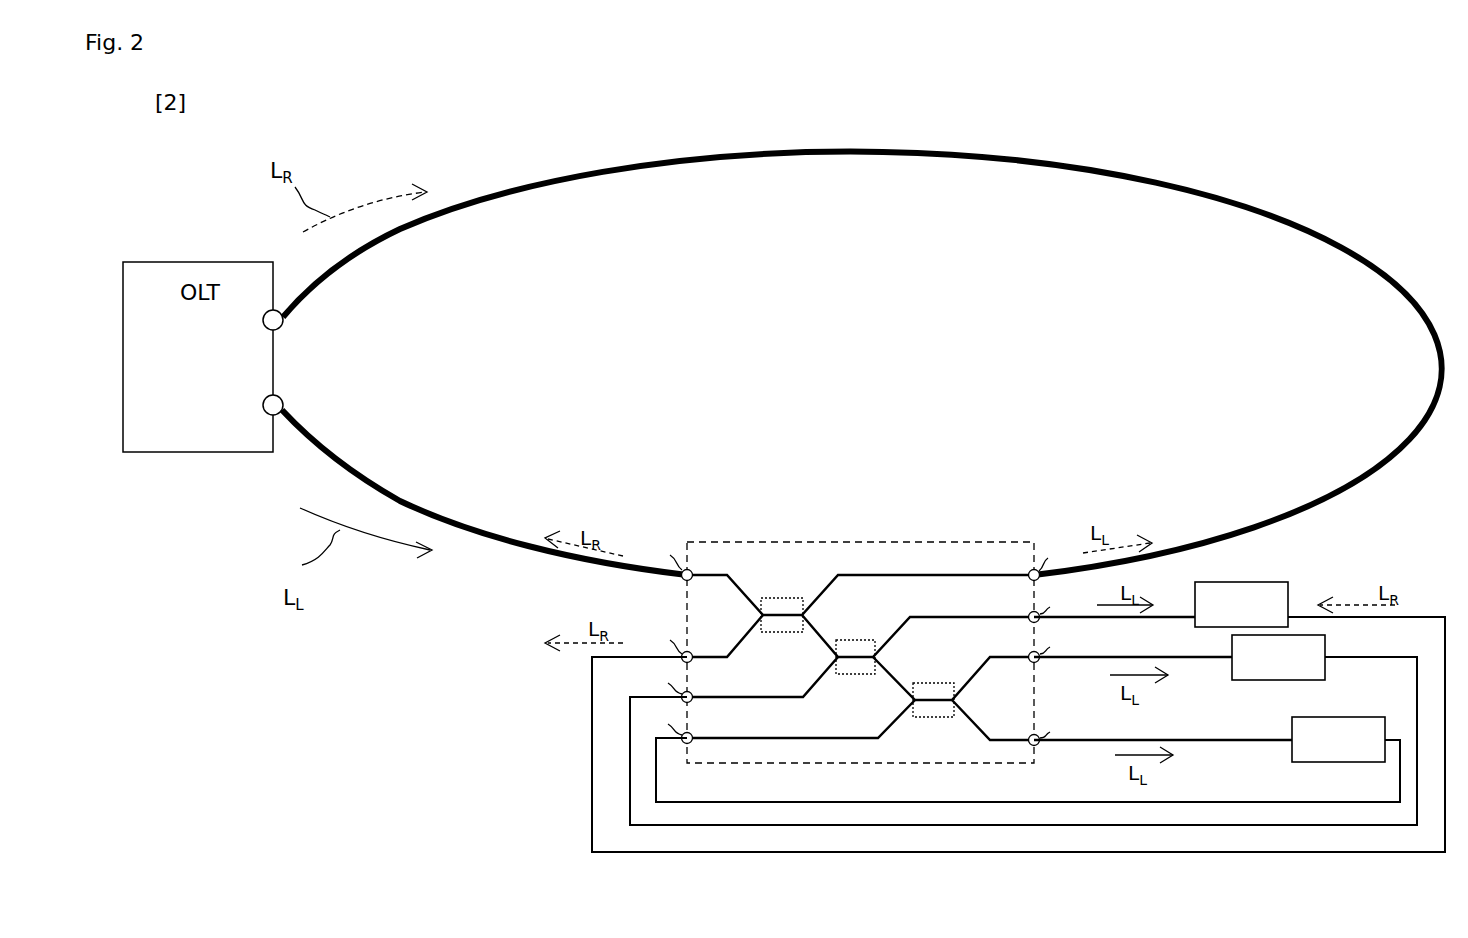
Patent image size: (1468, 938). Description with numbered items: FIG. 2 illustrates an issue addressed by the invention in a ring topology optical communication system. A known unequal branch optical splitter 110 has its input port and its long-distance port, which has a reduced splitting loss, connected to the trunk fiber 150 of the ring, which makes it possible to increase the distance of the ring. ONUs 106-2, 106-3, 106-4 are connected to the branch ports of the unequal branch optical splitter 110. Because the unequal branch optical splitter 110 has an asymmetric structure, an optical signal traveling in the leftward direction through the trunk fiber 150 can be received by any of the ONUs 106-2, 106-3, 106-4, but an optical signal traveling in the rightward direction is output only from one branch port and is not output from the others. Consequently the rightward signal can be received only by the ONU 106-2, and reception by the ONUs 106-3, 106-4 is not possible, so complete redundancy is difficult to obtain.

The trunk fiber 150 is at (1100, 160).
The unequal branch optical splitter 110 is at (905, 542).
The ONU 106-2 is at (1255, 582).
The ONU 106-3 is at (1325, 640).
The ONU 106-4 is at (1310, 717).